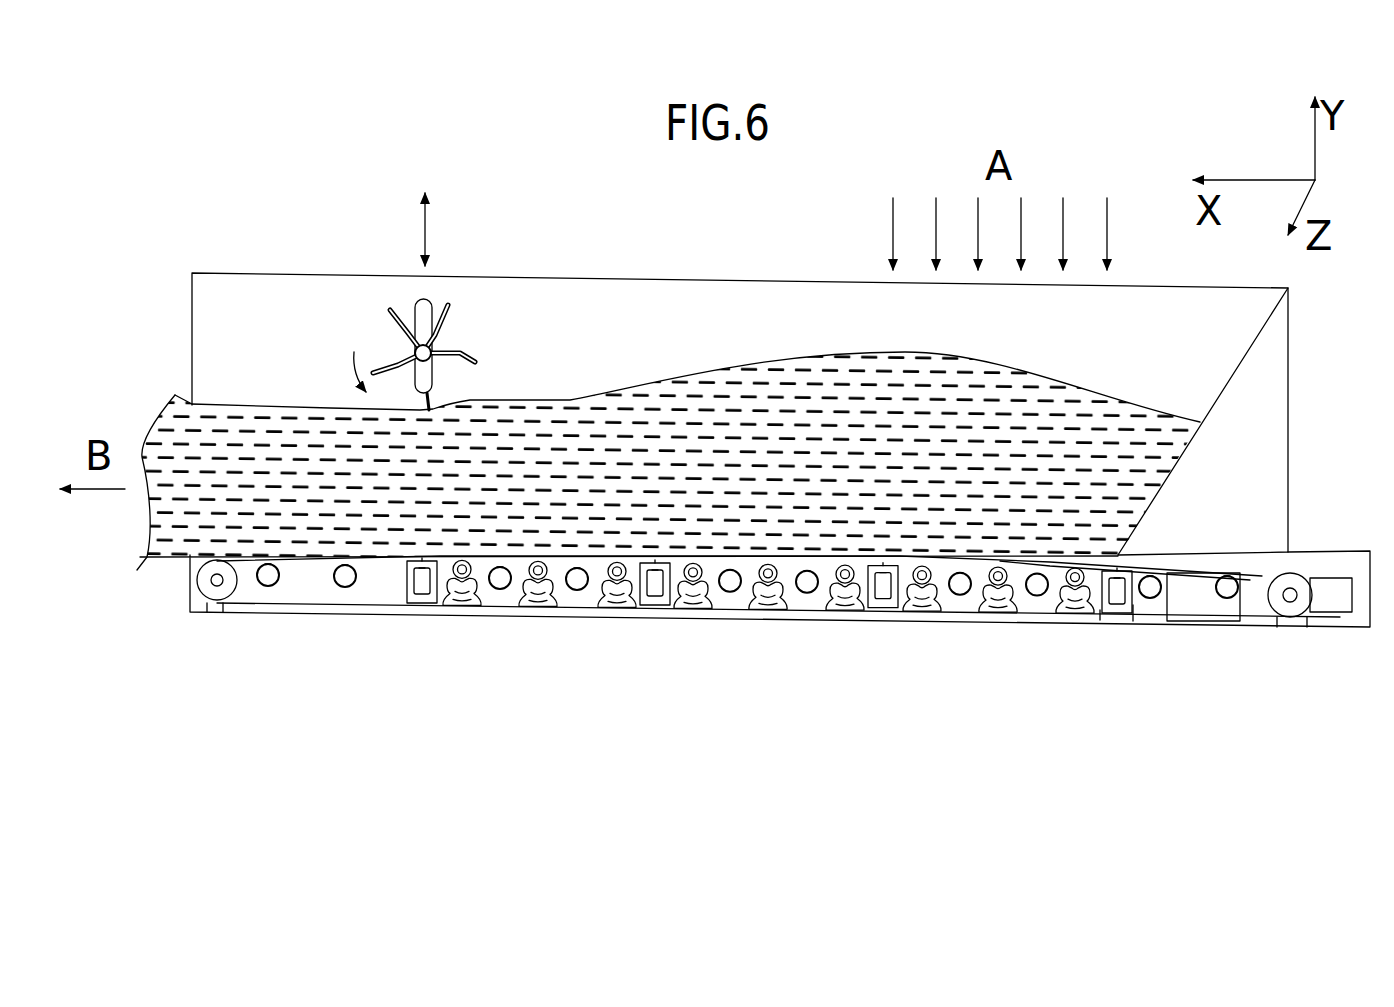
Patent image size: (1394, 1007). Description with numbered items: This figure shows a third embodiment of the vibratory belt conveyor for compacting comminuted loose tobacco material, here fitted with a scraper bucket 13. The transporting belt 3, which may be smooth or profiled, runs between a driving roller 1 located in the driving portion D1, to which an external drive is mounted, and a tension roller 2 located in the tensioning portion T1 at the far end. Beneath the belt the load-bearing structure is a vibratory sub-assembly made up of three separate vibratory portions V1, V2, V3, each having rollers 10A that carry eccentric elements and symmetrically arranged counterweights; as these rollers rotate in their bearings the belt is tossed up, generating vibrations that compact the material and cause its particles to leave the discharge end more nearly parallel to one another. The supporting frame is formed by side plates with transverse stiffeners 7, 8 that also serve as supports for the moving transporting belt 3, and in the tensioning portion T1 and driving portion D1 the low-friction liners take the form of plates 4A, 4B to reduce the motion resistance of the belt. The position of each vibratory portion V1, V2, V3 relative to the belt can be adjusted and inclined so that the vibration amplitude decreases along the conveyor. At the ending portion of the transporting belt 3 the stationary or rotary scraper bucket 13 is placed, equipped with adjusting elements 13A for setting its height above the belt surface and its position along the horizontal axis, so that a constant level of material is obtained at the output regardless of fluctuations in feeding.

The driving roller 1 is at (203, 620).
The tension roller 2 is at (1305, 612).
The transporting belt 3 is at (258, 615).
The driving portion D1 is at (309, 588).
The low-friction liner plate 4B is at (390, 567).
The transverse stiffener 7 is at (640, 610).
The transverse stiffener 8 is at (718, 610).
The third vibratory portion V3 is at (540, 618).
The second vibratory portion V2 is at (762, 618).
The first vibratory portion V1 is at (955, 620).
The roller 10A is at (1080, 615).
The low-friction liner plate 4A is at (1175, 612).
The tensioning portion T1 is at (1213, 600).
The scraper bucket 13 is at (473, 350).
The adjusting elements 13A is at (423, 324).